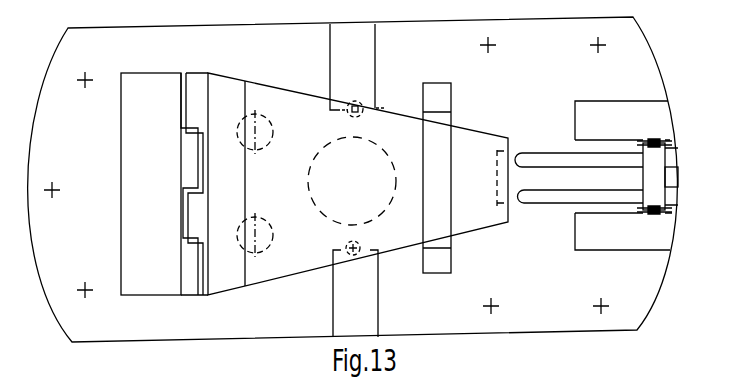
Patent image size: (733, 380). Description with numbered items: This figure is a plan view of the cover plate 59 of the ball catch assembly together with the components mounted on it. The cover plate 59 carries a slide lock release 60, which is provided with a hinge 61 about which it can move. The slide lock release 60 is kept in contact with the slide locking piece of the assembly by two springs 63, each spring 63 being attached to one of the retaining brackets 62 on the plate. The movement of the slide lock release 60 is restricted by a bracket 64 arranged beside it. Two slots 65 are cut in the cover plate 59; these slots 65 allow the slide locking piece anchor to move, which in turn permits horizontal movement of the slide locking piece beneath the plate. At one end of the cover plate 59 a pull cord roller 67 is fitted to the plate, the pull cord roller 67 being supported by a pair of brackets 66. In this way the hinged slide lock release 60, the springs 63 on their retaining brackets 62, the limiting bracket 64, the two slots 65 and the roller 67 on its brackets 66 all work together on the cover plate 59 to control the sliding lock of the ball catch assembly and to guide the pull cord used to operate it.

The cover plate 59 is at (353, 179).
The slide lock release 60 is at (358, 184).
The hinge 61 is at (164, 184).
The retaining brackets 62 is at (357, 180).
The spring 63 is at (363, 106).
The bracket 64 is at (437, 163).
The slots 65 is at (562, 198).
The brackets 66 is at (622, 121).
The pull cord roller 67 is at (655, 172).